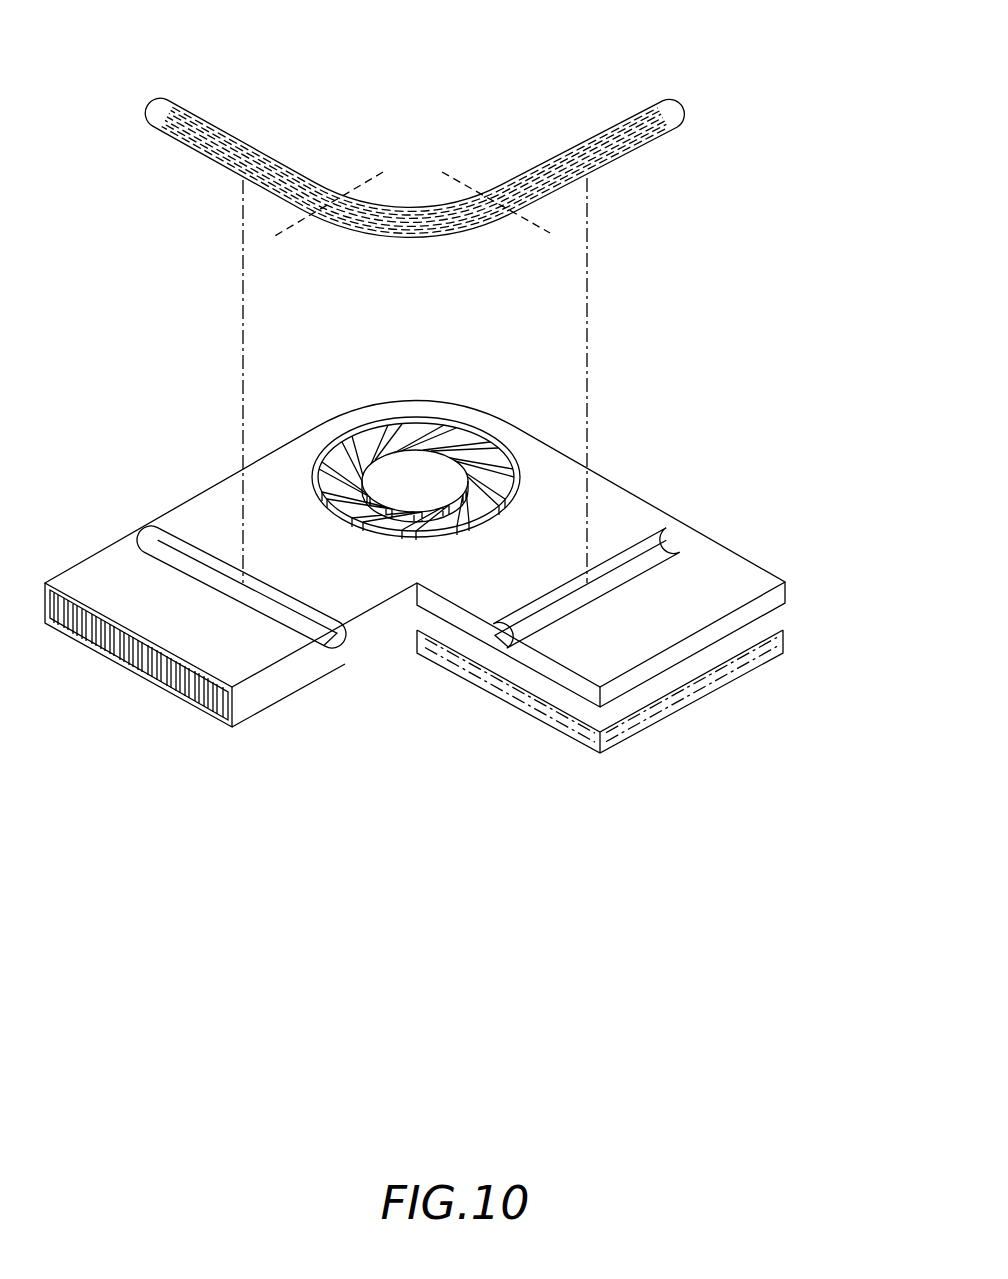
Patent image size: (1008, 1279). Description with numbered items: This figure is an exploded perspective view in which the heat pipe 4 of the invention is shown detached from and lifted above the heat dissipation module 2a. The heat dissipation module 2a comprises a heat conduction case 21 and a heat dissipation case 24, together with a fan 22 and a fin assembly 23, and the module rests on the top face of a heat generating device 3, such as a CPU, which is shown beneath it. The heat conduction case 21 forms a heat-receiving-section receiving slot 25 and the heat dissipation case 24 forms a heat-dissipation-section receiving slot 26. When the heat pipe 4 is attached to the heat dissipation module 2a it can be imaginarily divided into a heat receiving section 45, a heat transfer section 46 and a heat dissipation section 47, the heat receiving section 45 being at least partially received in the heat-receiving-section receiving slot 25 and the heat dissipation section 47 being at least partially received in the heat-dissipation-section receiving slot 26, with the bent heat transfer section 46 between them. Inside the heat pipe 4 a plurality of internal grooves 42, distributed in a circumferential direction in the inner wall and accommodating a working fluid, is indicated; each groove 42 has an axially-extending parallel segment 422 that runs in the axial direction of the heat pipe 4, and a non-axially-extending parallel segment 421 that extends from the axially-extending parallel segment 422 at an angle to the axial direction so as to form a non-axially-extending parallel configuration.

The heat pipe 4 is at (640, 55).
The heat dissipation section 47 is at (179, 97).
The heat transfer section 46 is at (383, 171).
The heat receiving section 45 is at (652, 97).
The internal groove 42 is at (498, 315).
The non-axially-extending parallel segment 421 is at (587, 180).
The axially-extending parallel segment 422 is at (497, 205).
The fan 22 is at (400, 463).
The heat dissipation case 24 is at (120, 557).
The heat conduction case 21 is at (717, 567).
The heat dissipation module 2a is at (806, 538).
The heat generating device 3 is at (757, 652).
The fin assembly 23 is at (172, 695).
The heat-receiving-section receiving slot 25 is at (510, 634).
The heat-dissipation-section receiving slot 26 is at (327, 636).